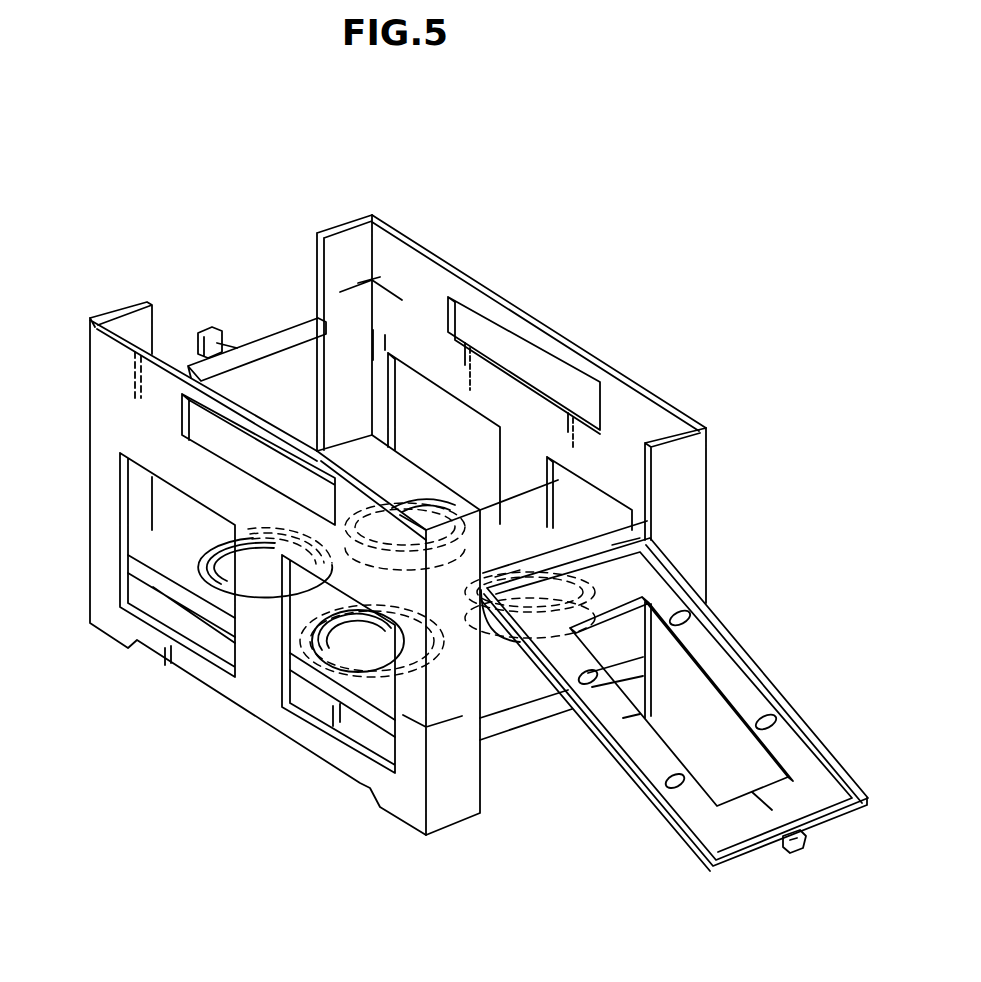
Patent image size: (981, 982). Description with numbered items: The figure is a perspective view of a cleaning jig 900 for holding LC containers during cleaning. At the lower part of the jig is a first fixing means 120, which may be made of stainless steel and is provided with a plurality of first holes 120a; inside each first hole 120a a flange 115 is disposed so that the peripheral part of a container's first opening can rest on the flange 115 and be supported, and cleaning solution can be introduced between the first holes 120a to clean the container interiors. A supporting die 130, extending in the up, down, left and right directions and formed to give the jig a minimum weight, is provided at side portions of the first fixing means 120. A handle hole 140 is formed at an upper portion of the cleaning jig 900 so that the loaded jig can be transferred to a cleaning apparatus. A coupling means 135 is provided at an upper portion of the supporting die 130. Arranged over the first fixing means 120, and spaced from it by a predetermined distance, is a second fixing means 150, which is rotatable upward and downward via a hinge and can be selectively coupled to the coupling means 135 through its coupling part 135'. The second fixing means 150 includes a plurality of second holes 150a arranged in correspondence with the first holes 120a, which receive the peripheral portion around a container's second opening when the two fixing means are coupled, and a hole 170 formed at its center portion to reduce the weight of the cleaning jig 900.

The cleaning jig 900 is at (738, 313).
The supporting die 130 is at (347, 232).
The coupling means 135 is at (257, 325).
The handle hole 140 is at (547, 368).
The first fixing means 120 is at (166, 553).
The first holes 120a is at (363, 657).
The flange 115 is at (313, 687).
The second fixing means 150 is at (820, 808).
The second holes 150a is at (670, 790).
The hole 170 is at (723, 730).
The coupling part 135' is at (783, 880).